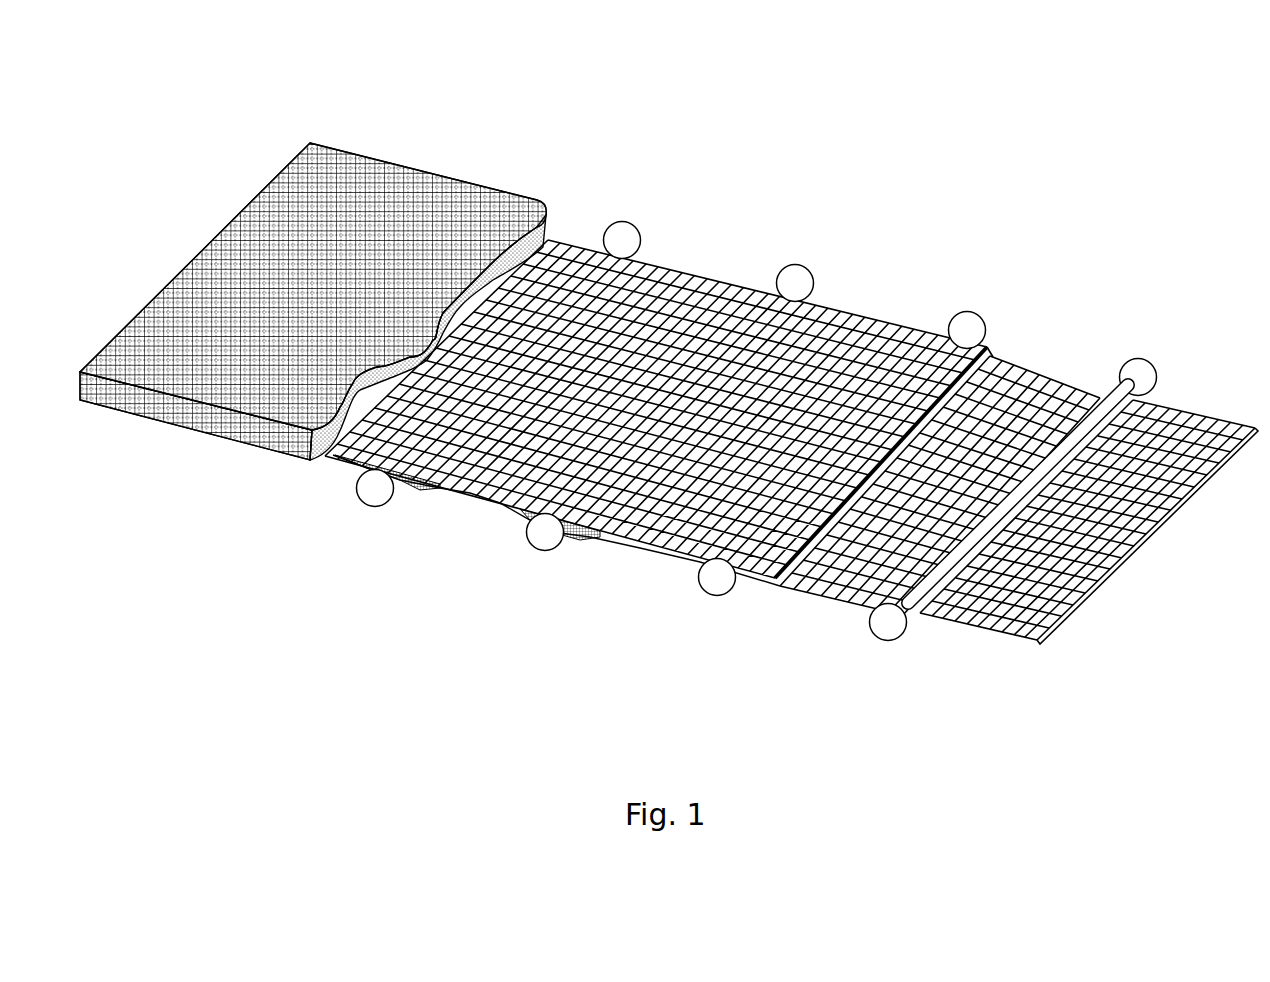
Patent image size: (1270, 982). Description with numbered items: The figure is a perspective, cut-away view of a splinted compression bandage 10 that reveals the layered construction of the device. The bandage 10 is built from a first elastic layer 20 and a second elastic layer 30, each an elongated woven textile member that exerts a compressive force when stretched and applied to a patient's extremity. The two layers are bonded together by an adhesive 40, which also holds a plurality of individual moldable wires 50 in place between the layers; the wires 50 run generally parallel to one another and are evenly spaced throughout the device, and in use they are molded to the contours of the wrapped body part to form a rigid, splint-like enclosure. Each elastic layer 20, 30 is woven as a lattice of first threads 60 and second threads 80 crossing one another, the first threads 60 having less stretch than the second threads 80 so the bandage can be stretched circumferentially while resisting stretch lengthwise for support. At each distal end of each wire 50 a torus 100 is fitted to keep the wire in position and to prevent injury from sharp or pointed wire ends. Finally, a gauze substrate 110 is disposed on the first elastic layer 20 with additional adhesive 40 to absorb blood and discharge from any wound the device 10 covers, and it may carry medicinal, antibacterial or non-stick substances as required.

The splinted compression bandage 10 is at (1005, 117).
The first elastic layer 20 is at (873, 343).
The second elastic layer 30 is at (1165, 415).
The adhesive 40 is at (350, 467).
The moldable wires 50 is at (1113, 395).
The first threads 60 is at (1075, 582).
The second threads 80 is at (1163, 452).
The torus 100 is at (622, 236).
The gauze substrate 110 is at (385, 175).